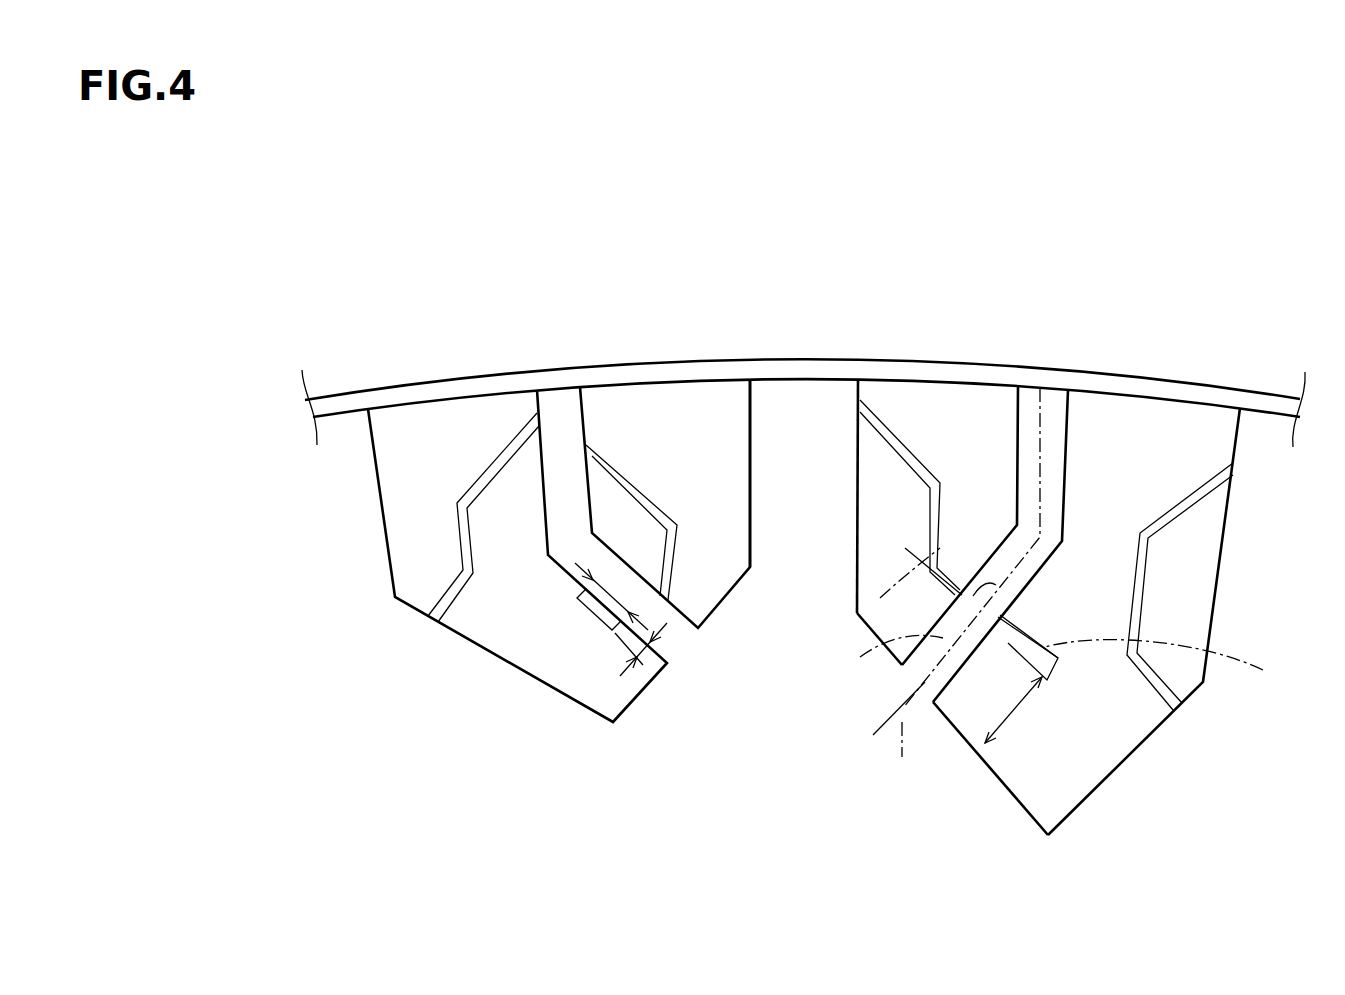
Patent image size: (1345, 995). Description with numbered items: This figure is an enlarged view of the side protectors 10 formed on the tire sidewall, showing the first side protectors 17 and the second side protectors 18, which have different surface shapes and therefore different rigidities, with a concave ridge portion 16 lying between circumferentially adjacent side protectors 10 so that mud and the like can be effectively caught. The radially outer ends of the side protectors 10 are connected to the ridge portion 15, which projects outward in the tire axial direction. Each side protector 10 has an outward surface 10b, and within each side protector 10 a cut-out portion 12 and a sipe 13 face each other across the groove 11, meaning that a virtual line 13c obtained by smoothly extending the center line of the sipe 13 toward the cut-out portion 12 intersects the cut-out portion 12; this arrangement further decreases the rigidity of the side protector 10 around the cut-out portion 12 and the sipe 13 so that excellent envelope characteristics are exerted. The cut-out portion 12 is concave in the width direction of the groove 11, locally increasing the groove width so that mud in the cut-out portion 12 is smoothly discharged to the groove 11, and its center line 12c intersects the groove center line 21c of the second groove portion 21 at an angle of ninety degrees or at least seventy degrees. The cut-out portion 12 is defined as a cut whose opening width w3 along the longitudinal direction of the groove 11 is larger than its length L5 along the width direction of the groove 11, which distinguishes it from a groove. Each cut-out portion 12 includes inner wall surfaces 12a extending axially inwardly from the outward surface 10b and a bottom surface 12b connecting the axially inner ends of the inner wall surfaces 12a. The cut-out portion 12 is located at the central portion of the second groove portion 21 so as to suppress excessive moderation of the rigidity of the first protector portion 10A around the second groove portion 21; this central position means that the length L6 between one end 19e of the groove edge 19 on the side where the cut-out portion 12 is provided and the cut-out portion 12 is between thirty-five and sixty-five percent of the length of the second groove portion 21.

The second side protector 18 is at (506, 296).
The first side protector 17 is at (1116, 304).
The ridge portion 15 is at (800, 376).
The first protector portion 10A is at (1091, 578).
The side protector 10 is at (507, 589).
The outward surface 10b is at (485, 602).
The sipe 13 is at (468, 548).
The concave ridge portion 16 is at (818, 567).
The groove edge 19 is at (1114, 624).
The end of groove edge 19e is at (933, 703).
The second groove portion 21 is at (943, 638).
The groove center line 21c is at (900, 757).
The cut-out portion 12 is at (1042, 616).
The inner wall surface 12a is at (585, 602).
The bottom surface 12b is at (588, 600).
The center line of cut-out portion 12c is at (1183, 663).
The virtual line 13c is at (880, 598).
The groove 11 is at (912, 671).
The opening width w3 is at (612, 588).
The length of cut-out portion L5 is at (636, 662).
The length between groove edge end and cut-out portion L6 is at (1015, 716).